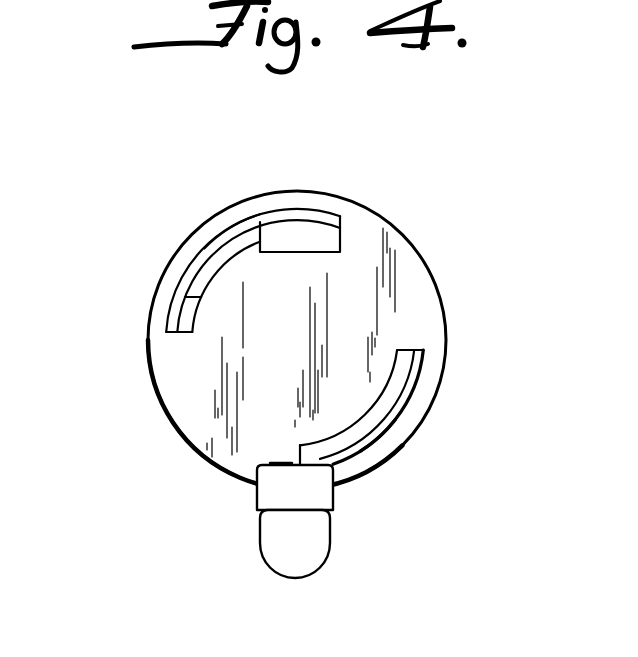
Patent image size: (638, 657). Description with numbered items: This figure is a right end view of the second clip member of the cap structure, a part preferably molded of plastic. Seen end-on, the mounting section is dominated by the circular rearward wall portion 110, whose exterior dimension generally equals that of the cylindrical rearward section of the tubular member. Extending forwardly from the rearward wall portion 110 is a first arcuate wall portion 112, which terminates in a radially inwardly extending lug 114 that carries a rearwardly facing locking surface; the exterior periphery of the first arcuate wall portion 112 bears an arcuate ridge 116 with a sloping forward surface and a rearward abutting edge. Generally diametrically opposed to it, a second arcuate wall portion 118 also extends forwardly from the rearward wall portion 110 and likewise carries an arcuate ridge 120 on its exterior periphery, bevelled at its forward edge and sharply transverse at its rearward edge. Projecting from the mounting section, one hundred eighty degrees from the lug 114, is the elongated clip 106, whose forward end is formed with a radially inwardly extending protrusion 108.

The elongated clip 106 is at (307, 550).
The protrusion 108 is at (280, 460).
The circular rearward wall portion 110 is at (420, 303).
The first arcuate wall portion 112 is at (213, 261).
The lug 114 is at (317, 240).
The arcuate ridge 116 is at (227, 235).
The second arcuate wall portion 118 is at (383, 407).
The arcuate ridge 120 is at (378, 438).